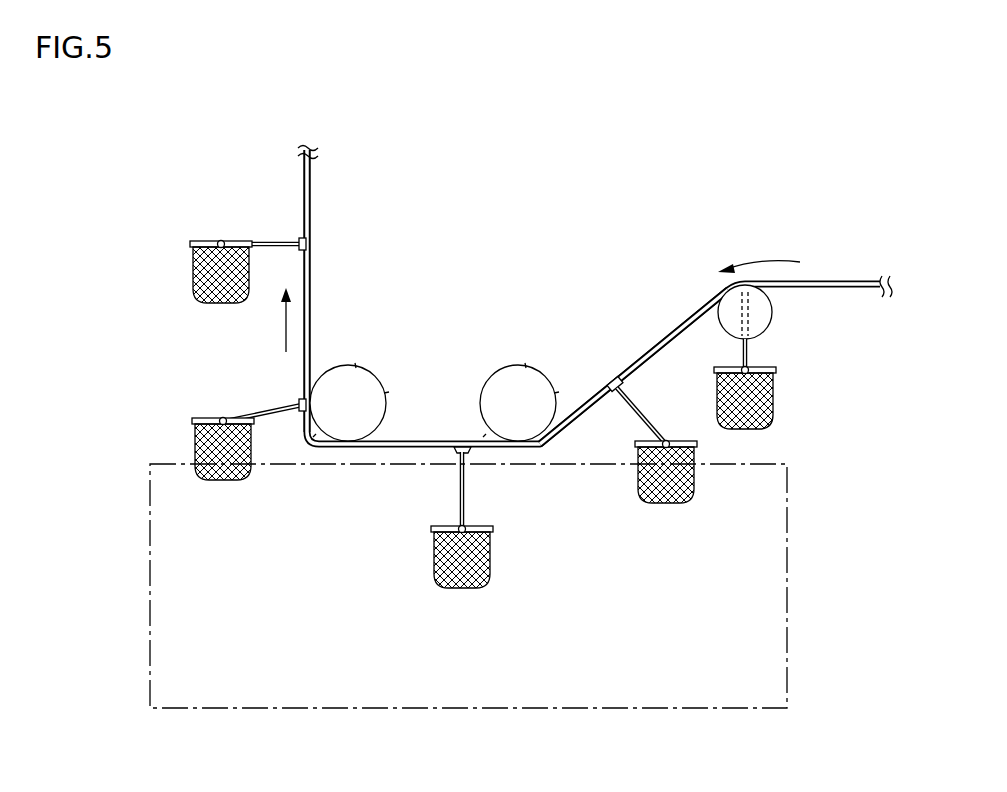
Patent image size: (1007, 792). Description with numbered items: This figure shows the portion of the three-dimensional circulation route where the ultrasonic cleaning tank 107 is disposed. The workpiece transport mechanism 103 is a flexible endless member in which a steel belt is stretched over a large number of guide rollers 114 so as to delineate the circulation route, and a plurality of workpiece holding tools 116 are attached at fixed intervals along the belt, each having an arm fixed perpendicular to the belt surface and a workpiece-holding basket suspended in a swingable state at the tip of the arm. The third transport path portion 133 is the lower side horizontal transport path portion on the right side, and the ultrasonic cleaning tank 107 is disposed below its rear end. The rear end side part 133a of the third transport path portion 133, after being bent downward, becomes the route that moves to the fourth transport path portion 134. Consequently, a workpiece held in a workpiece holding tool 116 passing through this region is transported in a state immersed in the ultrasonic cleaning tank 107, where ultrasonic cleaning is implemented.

The workpiece transport mechanism 103 is at (832, 272).
The third transport path portion 133 is at (690, 291).
The rear end side part of the third transport path portion 133a is at (652, 346).
The fourth transport path portion 134 is at (305, 188).
The guide roller 114 is at (363, 366).
The workpiece holding tool 116 is at (190, 283).
The ultrasonic cleaning tank 107 is at (793, 532).